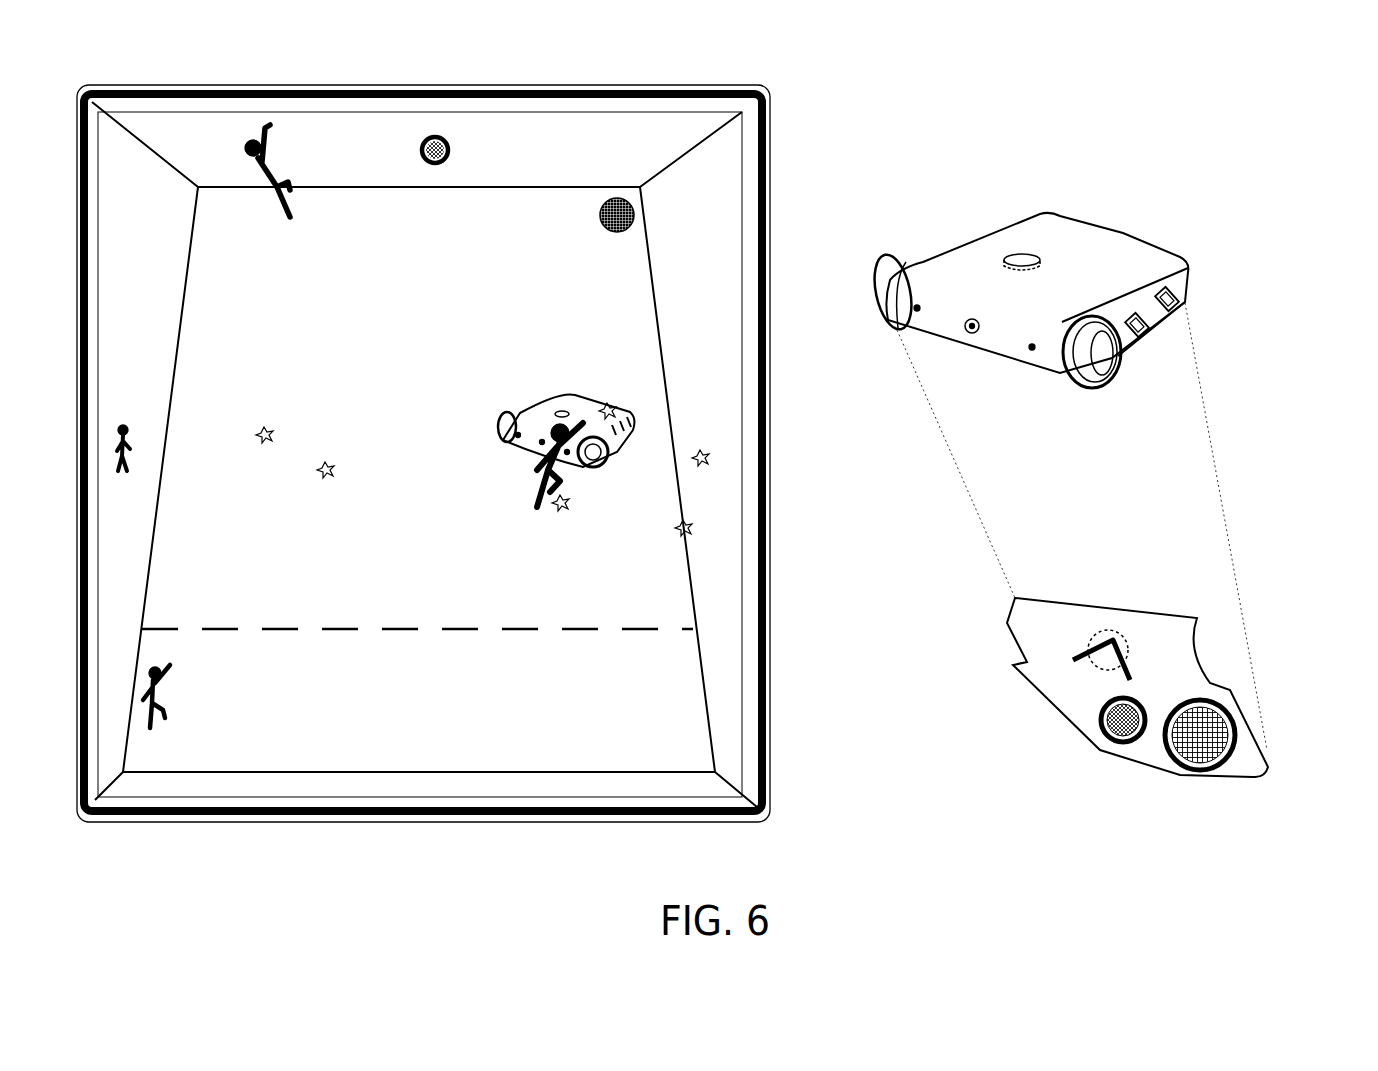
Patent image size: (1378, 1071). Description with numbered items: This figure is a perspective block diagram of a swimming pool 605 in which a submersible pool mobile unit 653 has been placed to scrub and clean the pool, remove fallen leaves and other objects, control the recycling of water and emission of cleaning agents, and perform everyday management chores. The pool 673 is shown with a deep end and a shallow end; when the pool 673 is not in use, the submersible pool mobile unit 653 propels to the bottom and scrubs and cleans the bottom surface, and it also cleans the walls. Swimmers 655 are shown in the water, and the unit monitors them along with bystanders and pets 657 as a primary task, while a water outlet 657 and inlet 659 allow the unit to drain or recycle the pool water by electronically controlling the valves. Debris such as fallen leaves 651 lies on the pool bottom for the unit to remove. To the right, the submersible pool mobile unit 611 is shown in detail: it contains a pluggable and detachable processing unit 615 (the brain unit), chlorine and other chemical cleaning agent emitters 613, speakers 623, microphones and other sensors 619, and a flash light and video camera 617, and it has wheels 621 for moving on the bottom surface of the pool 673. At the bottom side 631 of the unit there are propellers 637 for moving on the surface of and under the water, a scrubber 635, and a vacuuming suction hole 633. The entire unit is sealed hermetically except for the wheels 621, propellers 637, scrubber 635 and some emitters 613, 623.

The swimming pool 605 is at (1282, 40).
The submersible pool mobile unit 611 is at (1072, 321).
The chlorine and other chemical cleaning agent emitters 613 is at (1182, 302).
The pluggable and detachable processing unit 615 is at (1040, 265).
The flash light and video camera 617 is at (980, 333).
The microphones and other sensors 619 is at (1036, 352).
The wheels 621 is at (1107, 375).
The speakers 623 is at (1150, 333).
The bottom side of the submersible pool mobile unit 631 is at (1164, 680).
The vacuuming suction hole 633 is at (1223, 747).
The scrubber 635 is at (1103, 742).
The propellers 637 is at (1108, 668).
The debris 651 is at (680, 540).
The submersible pool mobile unit 653 is at (528, 447).
The swimmers 655 is at (273, 195).
The water outlet 657 is at (608, 235).
The inlet 659 is at (422, 162).
The swimming pool 673 is at (723, 715).